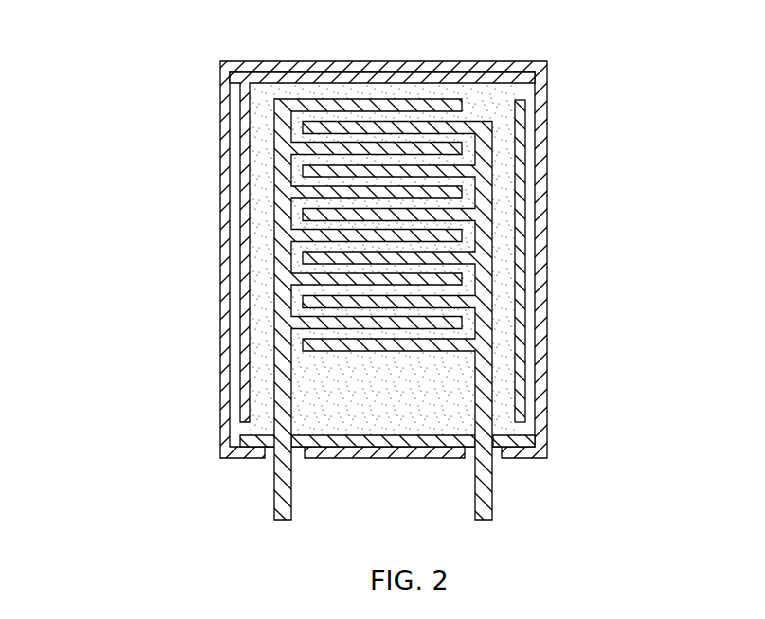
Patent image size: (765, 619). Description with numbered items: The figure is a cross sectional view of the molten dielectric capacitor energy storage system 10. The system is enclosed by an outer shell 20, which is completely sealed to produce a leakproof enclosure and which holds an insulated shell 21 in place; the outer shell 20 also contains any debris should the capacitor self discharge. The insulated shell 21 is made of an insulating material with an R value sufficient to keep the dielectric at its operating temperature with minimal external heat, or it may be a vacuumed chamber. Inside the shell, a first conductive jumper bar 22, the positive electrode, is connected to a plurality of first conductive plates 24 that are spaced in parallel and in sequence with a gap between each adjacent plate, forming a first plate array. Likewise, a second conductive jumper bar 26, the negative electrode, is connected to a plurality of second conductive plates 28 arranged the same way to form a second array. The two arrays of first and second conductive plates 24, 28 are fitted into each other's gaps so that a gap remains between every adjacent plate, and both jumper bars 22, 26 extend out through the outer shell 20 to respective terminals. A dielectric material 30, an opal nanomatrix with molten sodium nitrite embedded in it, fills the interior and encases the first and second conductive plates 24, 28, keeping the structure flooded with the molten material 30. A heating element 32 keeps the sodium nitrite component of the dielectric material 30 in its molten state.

The molten dielectric capacitor energy storage system 10 is at (152, 37).
The outer shell 20 is at (230, 135).
The insulated shell 21 is at (230, 176).
The first conductive jumper bar 22 is at (277, 515).
The first conductive plates 24 is at (375, 100).
The second conductive jumper bar 26 is at (493, 515).
The second conductive plates 28 is at (422, 350).
The dielectric material 30 is at (260, 307).
The heating element 32 is at (525, 130).